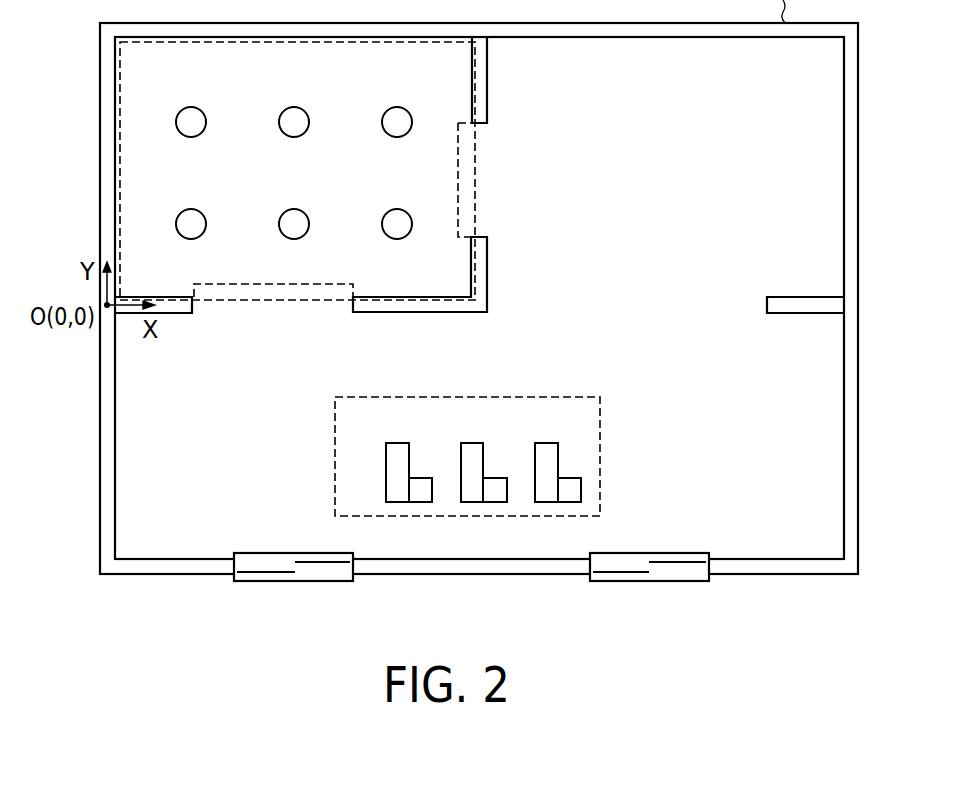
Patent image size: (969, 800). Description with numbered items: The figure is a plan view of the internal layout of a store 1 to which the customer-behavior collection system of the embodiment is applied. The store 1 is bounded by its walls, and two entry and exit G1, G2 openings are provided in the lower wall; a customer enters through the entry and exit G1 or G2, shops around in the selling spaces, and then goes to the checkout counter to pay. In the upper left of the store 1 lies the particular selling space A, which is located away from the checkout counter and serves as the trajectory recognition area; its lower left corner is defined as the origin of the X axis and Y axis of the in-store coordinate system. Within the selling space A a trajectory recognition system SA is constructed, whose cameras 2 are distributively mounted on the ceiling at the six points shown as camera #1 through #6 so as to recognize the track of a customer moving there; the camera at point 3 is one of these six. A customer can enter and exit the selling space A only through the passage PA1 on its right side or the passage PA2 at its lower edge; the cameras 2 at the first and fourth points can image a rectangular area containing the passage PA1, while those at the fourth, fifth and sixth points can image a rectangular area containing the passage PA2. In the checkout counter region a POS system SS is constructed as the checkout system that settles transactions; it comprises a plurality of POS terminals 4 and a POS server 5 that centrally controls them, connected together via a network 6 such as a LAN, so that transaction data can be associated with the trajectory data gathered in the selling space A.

The selling space A is at (297, 171).
The trajectory recognition system SA is at (120, 152).
The passage PA1 is at (445, 180).
The passage PA2 is at (273, 275).
The POS system SS is at (600, 452).
The entry and exit G1 is at (295, 585).
The entry and exit G2 is at (649, 585).
The store 1 is at (397, 108).
The camera 2 is at (294, 108).
The camera # 3 is at (191, 108).
The POS terminal 4 is at (397, 210).
The POS server 5 is at (294, 210).
The network 6 is at (191, 210).